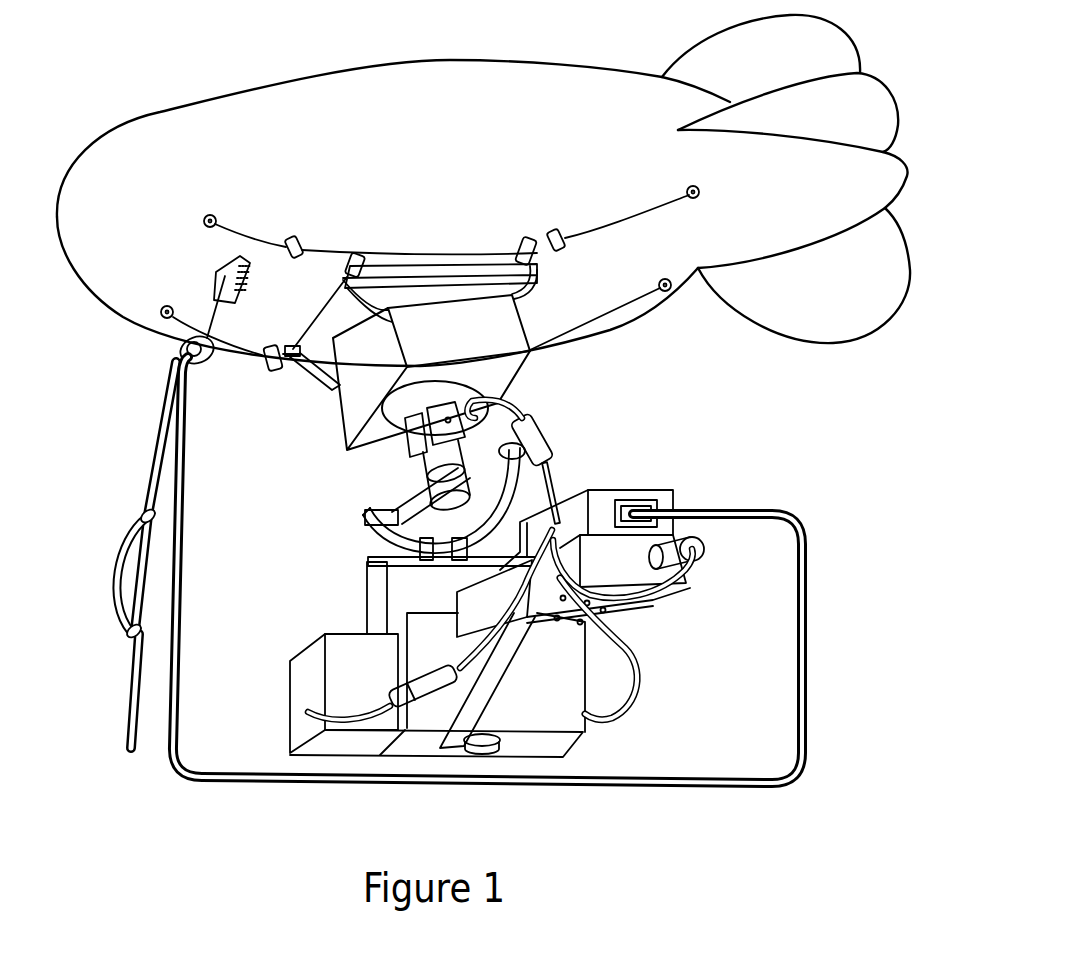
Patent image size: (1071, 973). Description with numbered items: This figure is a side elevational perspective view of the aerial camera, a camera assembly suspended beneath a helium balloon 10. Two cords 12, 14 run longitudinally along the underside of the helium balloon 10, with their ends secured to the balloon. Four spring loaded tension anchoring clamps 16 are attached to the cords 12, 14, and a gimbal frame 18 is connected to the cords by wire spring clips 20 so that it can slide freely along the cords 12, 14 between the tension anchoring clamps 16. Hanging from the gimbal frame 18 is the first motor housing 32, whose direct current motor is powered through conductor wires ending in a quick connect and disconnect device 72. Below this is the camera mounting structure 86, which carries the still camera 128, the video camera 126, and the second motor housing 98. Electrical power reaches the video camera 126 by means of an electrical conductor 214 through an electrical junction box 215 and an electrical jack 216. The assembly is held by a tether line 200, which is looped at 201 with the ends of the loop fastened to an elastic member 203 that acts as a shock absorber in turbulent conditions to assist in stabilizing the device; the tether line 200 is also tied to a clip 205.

The helium balloon 10 is at (462, 76).
The cord 12 is at (240, 222).
The cord 14 is at (184, 296).
The spring loaded tension anchoring clamp 16 is at (303, 234).
The gimbal frame 18 is at (410, 260).
The wire spring clip 20 is at (360, 256).
The first motor housing 32 is at (507, 368).
The quick connect and disconnect device 72 is at (537, 428).
The camera mounting structure 86 is at (380, 572).
The second motor housing 98 is at (350, 746).
The video camera 126 is at (623, 561).
The still camera 128 is at (585, 733).
The tether line 200 is at (140, 718).
The loop 201 is at (121, 528).
The elastic member 203 is at (151, 571).
The clip 205 is at (214, 360).
The electrical conductor 214 is at (654, 602).
The electrical junction box 215 is at (601, 496).
The electrical jack 216 is at (705, 548).